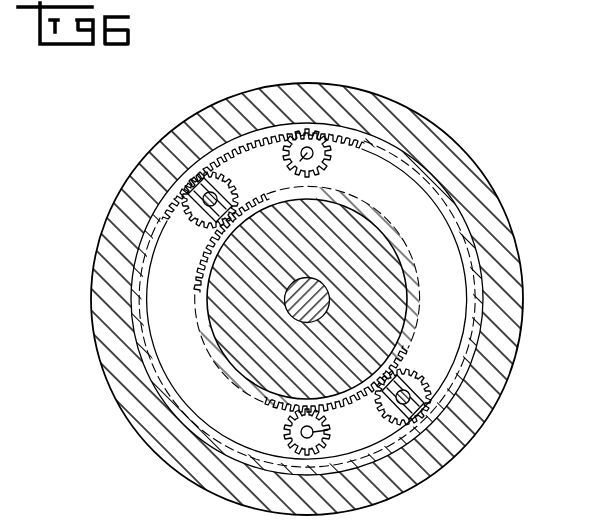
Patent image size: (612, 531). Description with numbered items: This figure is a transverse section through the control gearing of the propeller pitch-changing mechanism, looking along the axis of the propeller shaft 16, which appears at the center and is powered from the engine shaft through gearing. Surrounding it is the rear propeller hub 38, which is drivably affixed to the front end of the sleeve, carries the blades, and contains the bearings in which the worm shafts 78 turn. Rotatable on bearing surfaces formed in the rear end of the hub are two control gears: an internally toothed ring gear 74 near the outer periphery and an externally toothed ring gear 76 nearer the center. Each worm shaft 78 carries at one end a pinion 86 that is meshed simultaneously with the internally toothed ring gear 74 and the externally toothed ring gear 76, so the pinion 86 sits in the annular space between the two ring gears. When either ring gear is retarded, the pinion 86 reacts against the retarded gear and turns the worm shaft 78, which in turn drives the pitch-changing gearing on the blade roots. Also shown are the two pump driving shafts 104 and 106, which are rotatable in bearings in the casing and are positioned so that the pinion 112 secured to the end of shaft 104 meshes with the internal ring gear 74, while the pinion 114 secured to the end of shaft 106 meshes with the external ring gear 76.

The propeller shaft 16 is at (323, 290).
The rear propeller hub 38 is at (458, 160).
The internally toothed ring gear 74 is at (273, 137).
The externally toothed ring gear 76 is at (400, 350).
The worm shaft 78 is at (409, 388).
The pinion 86 is at (386, 412).
The pump driving shaft 104 is at (297, 170).
The pump driving shaft 106 is at (328, 431).
The pinion 112 is at (332, 153).
The pinion 114 is at (301, 432).